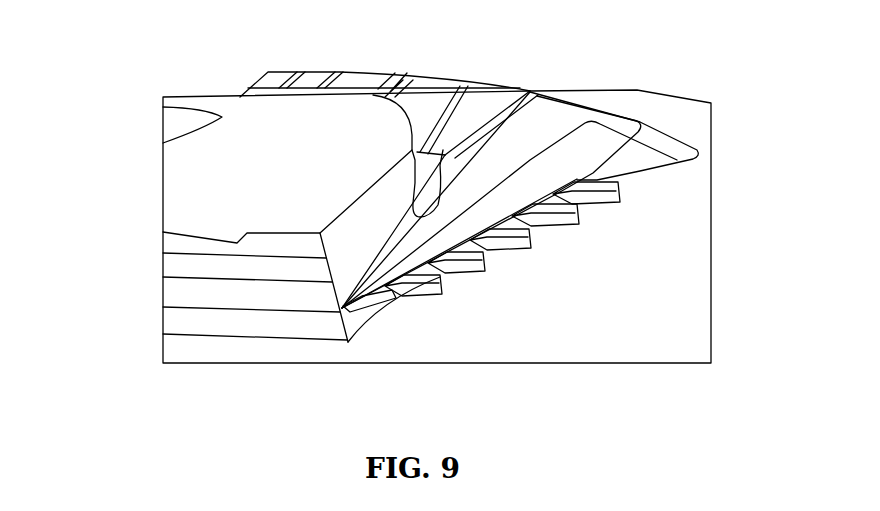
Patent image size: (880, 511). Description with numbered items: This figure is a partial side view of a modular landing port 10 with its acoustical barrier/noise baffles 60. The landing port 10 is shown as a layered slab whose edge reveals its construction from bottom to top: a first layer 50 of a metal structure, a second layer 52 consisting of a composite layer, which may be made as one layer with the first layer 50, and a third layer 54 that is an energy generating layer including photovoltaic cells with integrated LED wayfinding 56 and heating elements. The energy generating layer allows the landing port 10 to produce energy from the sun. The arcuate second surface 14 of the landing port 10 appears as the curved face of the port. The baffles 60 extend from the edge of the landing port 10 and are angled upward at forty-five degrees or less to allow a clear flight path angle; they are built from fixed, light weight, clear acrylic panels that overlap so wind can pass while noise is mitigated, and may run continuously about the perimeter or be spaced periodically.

The modular landing port 10 is at (316, 48).
The second surface 14 is at (360, 103).
The first layer 50 is at (257, 323).
The second layer 52 is at (178, 293).
The third layer 54 is at (178, 265).
The LED wayfinding 56 is at (178, 243).
The acoustical barrier/noise baffles 60 is at (503, 85).